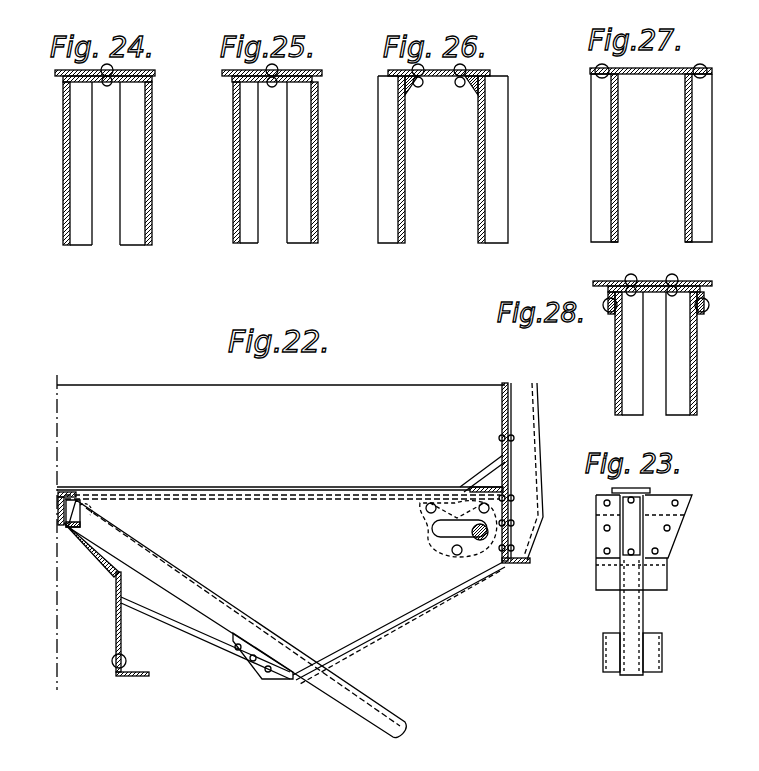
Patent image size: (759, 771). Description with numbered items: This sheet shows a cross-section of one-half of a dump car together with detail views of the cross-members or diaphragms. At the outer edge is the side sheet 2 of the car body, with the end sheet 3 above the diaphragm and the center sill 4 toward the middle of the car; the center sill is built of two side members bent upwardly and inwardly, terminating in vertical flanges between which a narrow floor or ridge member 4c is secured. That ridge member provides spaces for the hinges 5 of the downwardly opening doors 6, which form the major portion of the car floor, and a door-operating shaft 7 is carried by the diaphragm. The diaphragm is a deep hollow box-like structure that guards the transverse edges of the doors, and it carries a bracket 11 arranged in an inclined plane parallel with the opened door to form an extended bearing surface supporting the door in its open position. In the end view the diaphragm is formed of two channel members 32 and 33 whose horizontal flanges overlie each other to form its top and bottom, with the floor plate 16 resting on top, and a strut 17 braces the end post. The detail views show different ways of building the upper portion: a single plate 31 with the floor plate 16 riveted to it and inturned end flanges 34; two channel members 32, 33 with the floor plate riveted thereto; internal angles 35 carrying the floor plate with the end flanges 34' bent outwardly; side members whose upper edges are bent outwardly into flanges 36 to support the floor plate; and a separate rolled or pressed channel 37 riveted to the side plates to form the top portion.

In FIG. 22, the side sheet 2 is at (500, 406).
In FIG. 22, the end sheet 3 is at (281, 410).
In FIG. 22, the center sill 4 is at (116, 636).
In FIG. 22, the floor or ridge member 4c is at (60, 500).
In FIG. 22, the hinge 5 is at (66, 528).
In FIG. 22, the door 6 is at (246, 630).
In FIG. 22, the door-operating shaft 7 is at (482, 540).
In FIG. 23, the bracket 11 is at (604, 650).
In FIG. 22, the bracket 11 is at (242, 656).
In FIG. 24, the floor plate 16 is at (140, 74).
In FIG. 25, the floor plate 16 is at (308, 74).
In FIG. 26, the floor plate 16 is at (480, 73).
In FIG. 27, the floor plate 16 is at (665, 63).
In FIG. 28, the floor plate 16 is at (692, 281).
In FIG. 23, the floor plate 16 is at (650, 492).
In FIG. 22, the floor plate 16 is at (280, 482).
In FIG. 22, the strut 17 is at (476, 472).
In FIG. 24, the channel member 31 is at (63, 142).
In FIG. 25, the channel member 32 is at (233, 150).
In FIG. 23, the channel member 32 is at (620, 535).
In FIG. 22, the channel member 32 is at (317, 550).
In FIG. 25, the channel member 33 is at (308, 170).
In FIG. 23, the channel member 33 is at (662, 538).
In FIG. 24, the end flange 34 is at (107, 178).
In FIG. 26, the end flange 34' is at (443, 159).
In FIG. 26, the internal angle 35 is at (455, 98).
In FIG. 27, the flange 36 is at (596, 148).
In FIG. 28, the channel 37 is at (703, 297).